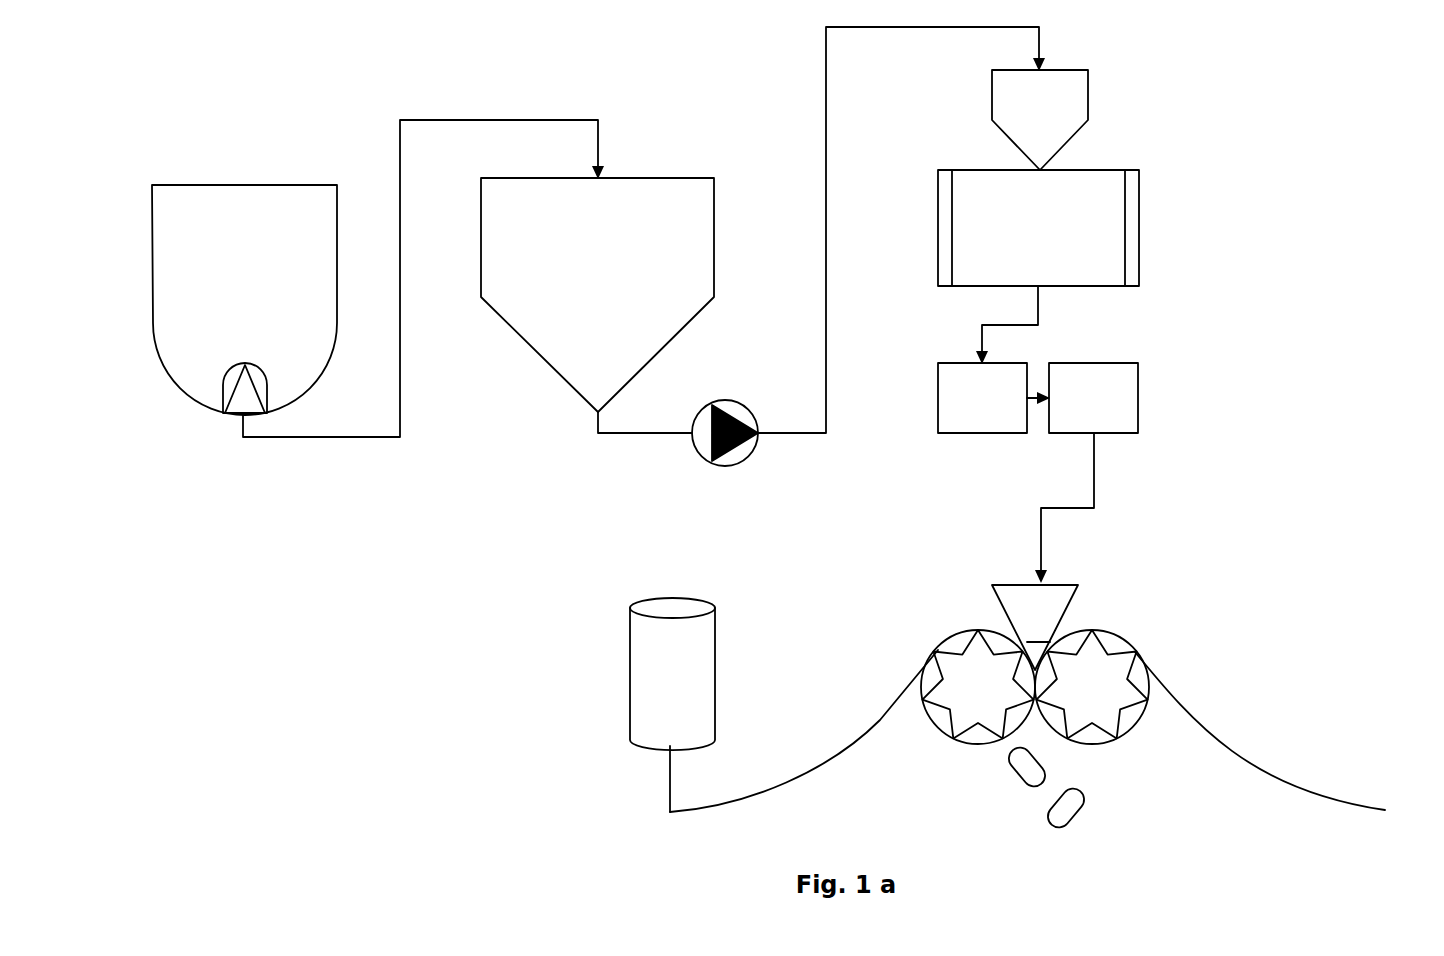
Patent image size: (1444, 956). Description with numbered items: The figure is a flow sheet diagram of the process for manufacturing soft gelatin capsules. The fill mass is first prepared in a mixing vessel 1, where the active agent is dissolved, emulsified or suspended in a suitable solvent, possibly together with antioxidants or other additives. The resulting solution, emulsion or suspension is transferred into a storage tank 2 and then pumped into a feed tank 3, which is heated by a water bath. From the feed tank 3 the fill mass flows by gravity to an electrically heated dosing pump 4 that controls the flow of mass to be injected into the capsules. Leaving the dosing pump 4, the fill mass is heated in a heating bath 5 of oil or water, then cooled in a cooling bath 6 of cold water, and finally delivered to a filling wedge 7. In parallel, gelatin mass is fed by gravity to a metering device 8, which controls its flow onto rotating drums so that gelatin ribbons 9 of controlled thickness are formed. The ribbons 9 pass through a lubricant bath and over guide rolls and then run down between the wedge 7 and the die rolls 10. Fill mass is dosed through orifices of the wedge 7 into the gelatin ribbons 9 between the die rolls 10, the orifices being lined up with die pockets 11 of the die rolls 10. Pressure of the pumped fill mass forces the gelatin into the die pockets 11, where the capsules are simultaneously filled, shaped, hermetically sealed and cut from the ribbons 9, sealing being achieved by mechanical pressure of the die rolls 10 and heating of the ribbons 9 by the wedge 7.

The mixing vessel 1 is at (228, 210).
The storage tank 2 is at (636, 200).
The feed tank 3 is at (1057, 98).
The dosing pump 4 is at (1098, 192).
The heating bath 5 is at (970, 383).
The cooling bath 6 is at (1093, 383).
The filling wedge 7 is at (1048, 606).
The metering device 8 is at (660, 632).
The gelatin ribbons 9 is at (813, 770).
The die rolls 10 is at (960, 665).
The die pockets 11 is at (945, 715).